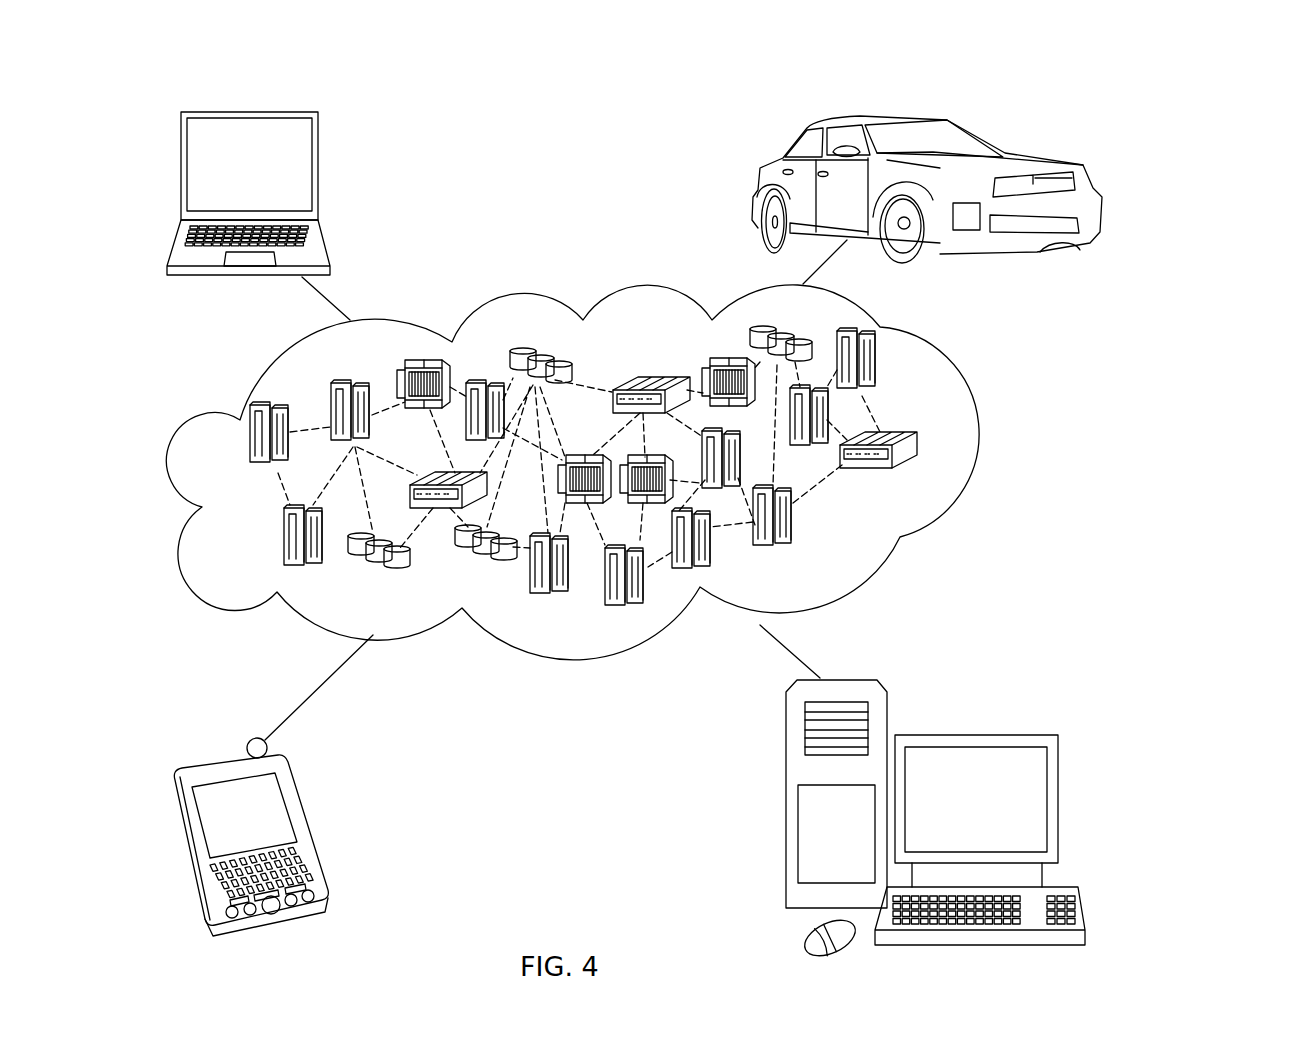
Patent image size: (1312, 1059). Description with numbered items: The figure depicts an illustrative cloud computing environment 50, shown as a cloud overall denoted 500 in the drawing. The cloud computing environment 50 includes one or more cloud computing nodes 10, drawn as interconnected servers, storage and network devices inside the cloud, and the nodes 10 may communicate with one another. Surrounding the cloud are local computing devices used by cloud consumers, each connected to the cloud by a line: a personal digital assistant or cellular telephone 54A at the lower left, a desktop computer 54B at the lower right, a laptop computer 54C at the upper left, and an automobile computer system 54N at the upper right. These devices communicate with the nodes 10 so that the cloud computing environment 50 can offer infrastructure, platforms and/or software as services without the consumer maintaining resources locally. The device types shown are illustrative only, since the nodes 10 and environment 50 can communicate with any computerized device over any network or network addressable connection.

The cloud computing environment 500 is at (1128, 98).
The cloud computing environment 50 is at (975, 445).
The cloud computing nodes 10 is at (917, 477).
The personal digital assistant (PDA) or cellular telephone 54A is at (307, 829).
The desktop computer 54B is at (976, 735).
The laptop computer 54C is at (318, 172).
The automobile computer system 54N is at (753, 190).